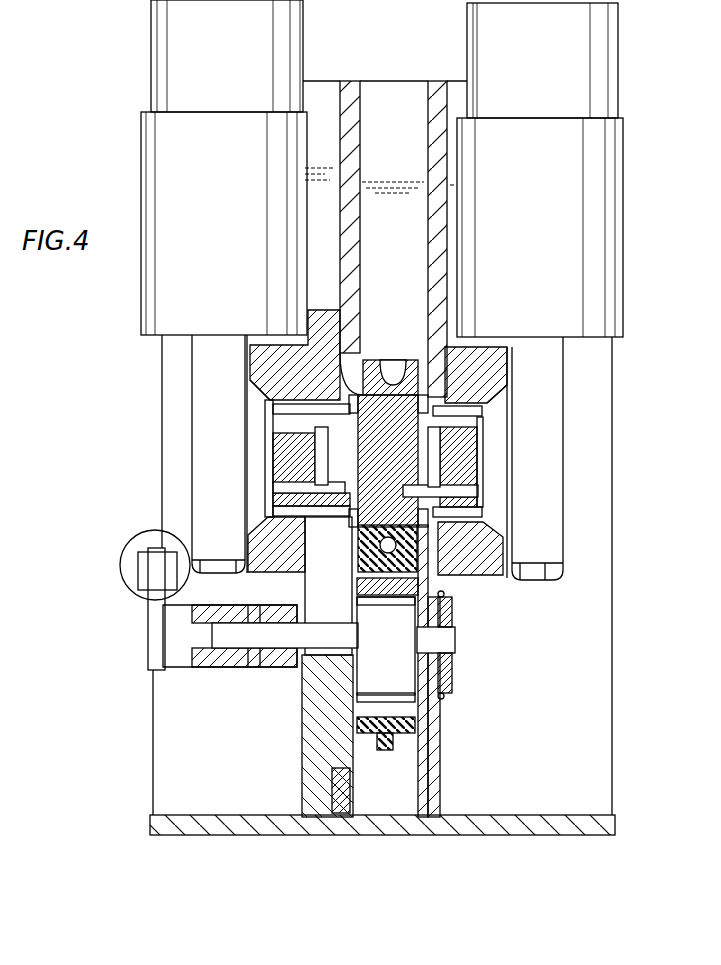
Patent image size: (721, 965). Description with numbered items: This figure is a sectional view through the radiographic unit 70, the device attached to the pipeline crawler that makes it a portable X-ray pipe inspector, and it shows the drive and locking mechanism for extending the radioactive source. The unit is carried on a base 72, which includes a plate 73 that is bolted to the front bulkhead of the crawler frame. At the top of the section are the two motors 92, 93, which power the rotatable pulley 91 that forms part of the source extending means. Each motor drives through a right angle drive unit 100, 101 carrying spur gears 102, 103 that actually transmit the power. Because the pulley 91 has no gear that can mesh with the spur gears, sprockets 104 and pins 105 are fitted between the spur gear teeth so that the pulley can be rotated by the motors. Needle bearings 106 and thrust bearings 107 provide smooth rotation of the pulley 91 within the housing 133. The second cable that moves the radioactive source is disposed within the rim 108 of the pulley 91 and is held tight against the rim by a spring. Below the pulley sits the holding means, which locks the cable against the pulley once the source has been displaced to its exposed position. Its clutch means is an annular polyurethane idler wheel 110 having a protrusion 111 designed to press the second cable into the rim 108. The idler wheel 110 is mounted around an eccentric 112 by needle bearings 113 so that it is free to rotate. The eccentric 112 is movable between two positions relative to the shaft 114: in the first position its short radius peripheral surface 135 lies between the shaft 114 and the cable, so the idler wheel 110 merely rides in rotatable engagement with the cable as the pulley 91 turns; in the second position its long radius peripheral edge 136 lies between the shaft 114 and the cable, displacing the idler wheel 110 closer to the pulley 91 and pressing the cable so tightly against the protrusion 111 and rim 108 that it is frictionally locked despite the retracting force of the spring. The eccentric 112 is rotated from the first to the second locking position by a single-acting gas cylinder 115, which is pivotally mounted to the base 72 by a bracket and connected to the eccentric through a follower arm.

The radiographic unit 70 is at (128, 423).
The base 72 is at (592, 836).
The plate 73 is at (615, 553).
The rotatable pulley 91 is at (470, 572).
The motor 92 is at (620, 70).
The motor 93 is at (151, 50).
The right angle drive unit 100 is at (210, 357).
The right angle drive unit 101 is at (213, 437).
The spur gear 102 is at (484, 470).
The spur gear 103 is at (300, 462).
The sprocket 104 is at (268, 408).
The pin 105 is at (272, 486).
The needle bearing 106 is at (250, 397).
The thrust bearing 107 is at (438, 397).
The rim 108 is at (460, 578).
The idler wheel 110 is at (415, 728).
The protrusion 111 is at (392, 750).
The eccentric 112 is at (300, 693).
The needle bearing 113 is at (356, 603).
The shaft 114 is at (458, 648).
The gas cylinder 115 is at (130, 552).
The housing 133 is at (270, 345).
The short radius peripheral surface 135 is at (453, 610).
The long radius peripheral edge 136 is at (440, 705).